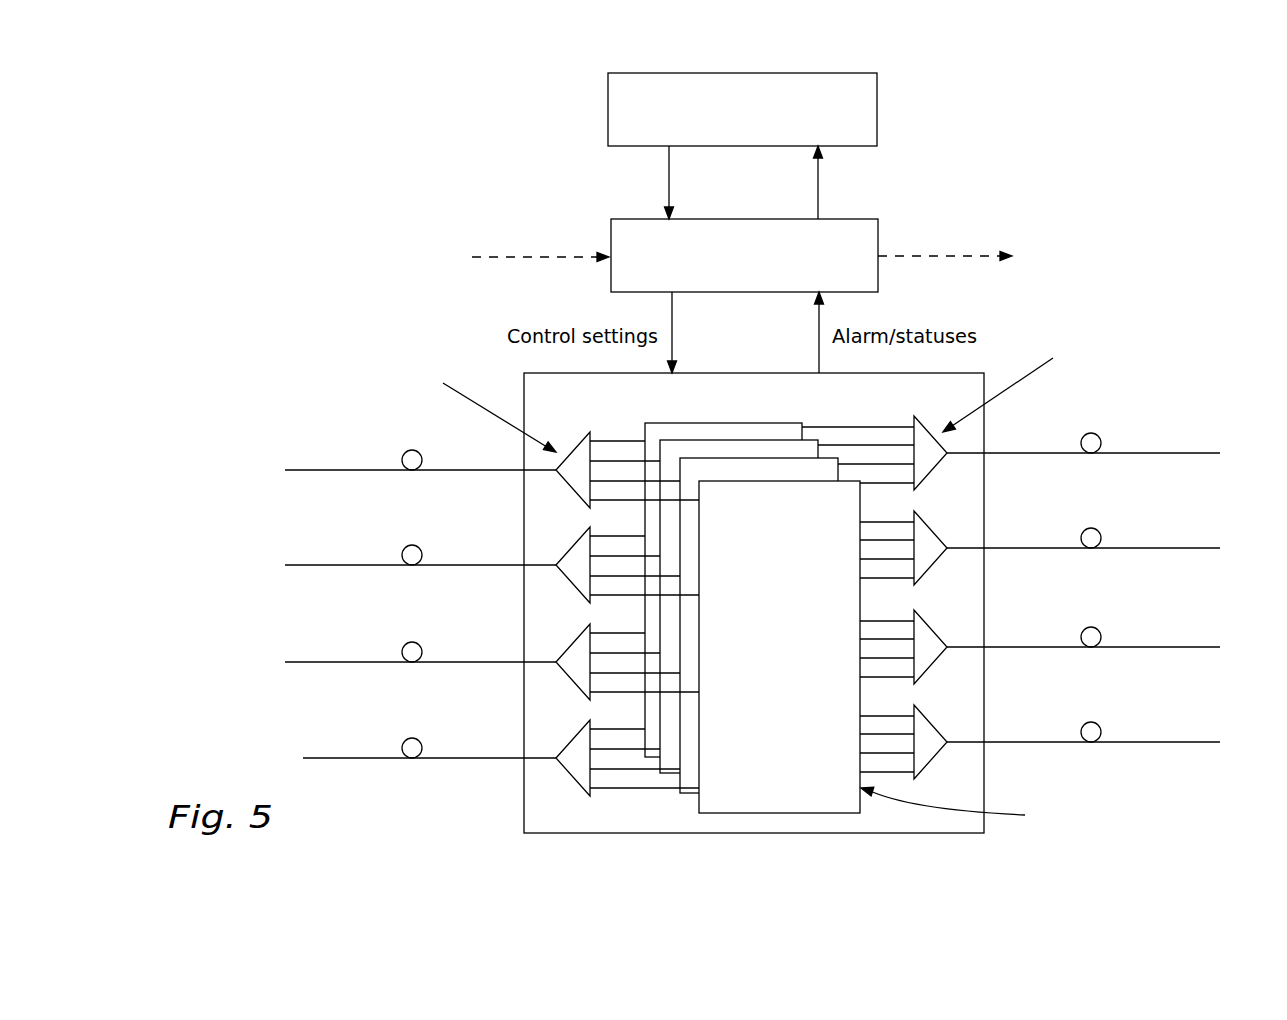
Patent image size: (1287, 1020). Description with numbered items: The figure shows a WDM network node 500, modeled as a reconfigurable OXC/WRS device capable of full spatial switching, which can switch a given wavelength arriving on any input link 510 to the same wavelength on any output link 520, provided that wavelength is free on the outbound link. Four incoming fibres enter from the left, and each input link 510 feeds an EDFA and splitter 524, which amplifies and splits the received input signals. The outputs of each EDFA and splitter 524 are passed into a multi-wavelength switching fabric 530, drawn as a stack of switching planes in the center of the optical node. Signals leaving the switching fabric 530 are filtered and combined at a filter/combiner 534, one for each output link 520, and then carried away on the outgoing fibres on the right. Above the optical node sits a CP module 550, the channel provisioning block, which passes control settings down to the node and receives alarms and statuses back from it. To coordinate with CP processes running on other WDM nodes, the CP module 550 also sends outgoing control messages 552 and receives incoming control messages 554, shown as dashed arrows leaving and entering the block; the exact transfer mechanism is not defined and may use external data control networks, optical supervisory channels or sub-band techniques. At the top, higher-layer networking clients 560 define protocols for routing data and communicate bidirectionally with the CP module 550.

The WDM network node 500 is at (358, 176).
The input link 510 is at (399, 795).
The output link 520 is at (1116, 415).
The EDFA and splitter 524 is at (353, 343).
The multi-wavelength switching fabric 530 is at (1203, 805).
The filter/combiner 534 is at (1140, 322).
The CP module 550 is at (878, 233).
The sending of control messages 552 is at (1117, 228).
The receiving of control messages 554 is at (470, 228).
The higher-layer networking clients 560 is at (877, 92).